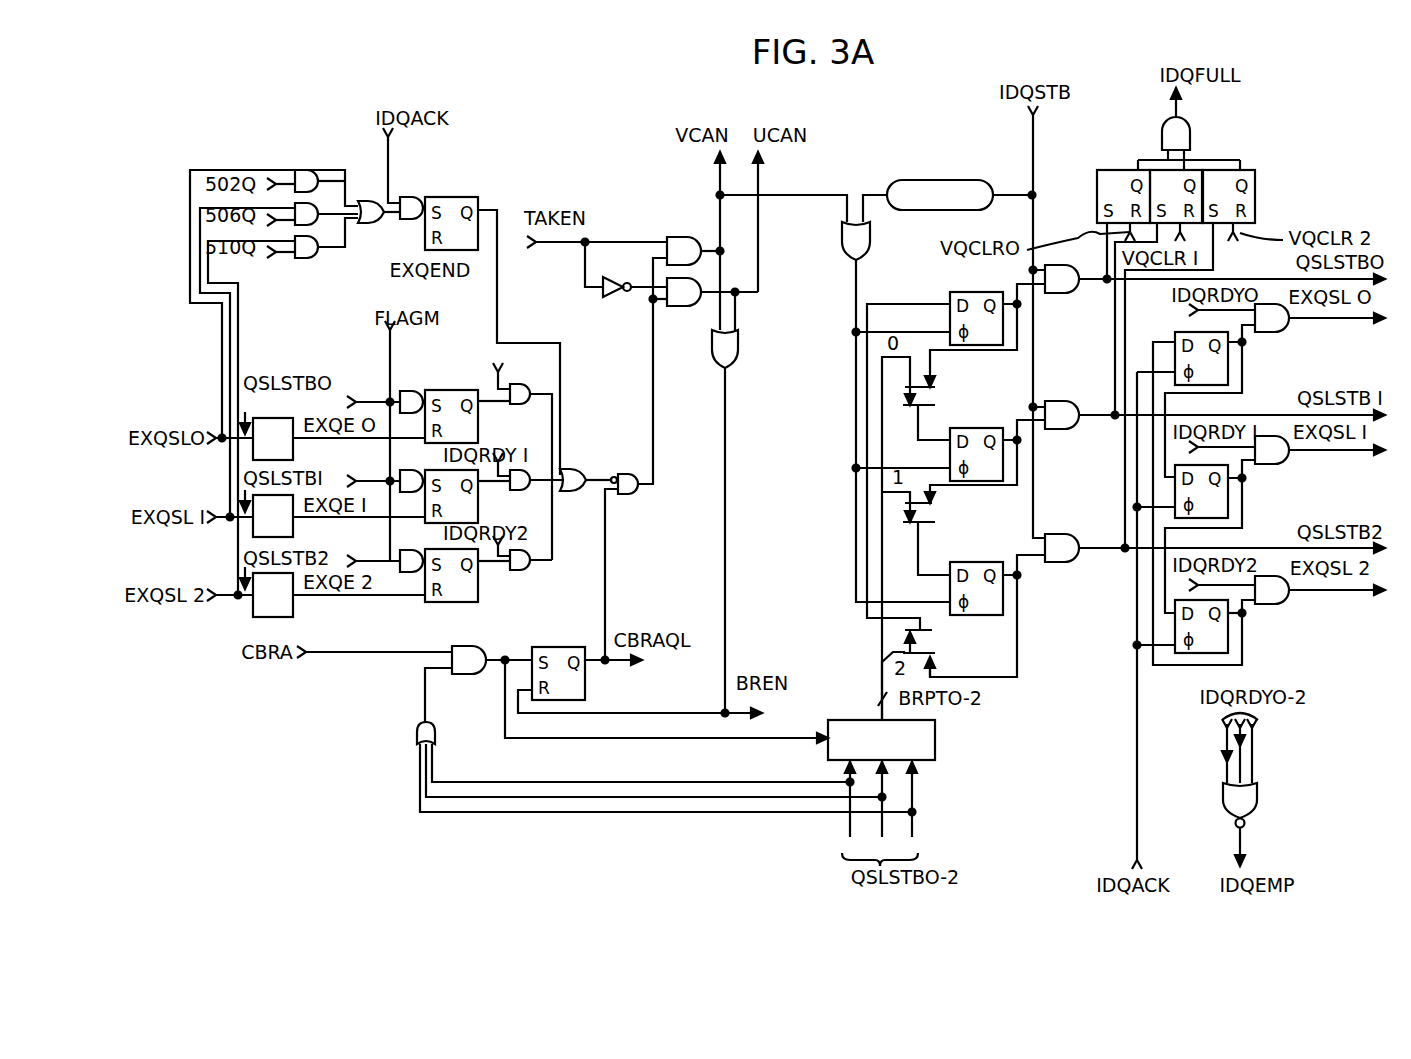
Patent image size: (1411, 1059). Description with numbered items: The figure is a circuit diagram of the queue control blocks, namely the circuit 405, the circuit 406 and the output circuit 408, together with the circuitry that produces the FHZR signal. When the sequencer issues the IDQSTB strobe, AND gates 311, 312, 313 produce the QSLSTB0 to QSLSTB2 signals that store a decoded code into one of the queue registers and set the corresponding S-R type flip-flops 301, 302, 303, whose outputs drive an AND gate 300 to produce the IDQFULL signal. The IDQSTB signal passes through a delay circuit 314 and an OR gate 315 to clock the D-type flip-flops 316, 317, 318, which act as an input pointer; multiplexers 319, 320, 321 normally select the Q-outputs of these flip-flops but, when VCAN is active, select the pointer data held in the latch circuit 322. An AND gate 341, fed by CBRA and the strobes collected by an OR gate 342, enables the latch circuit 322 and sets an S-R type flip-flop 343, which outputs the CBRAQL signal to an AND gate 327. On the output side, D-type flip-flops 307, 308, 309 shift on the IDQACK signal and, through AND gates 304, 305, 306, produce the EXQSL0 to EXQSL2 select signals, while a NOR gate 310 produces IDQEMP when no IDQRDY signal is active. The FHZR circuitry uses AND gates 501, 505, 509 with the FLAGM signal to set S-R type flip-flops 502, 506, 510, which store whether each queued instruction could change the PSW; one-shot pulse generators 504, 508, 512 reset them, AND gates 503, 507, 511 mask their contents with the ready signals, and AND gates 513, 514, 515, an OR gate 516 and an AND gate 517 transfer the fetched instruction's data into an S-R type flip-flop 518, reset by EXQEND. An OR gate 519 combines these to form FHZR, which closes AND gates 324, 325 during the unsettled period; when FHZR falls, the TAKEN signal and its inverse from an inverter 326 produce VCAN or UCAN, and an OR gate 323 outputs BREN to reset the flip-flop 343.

The AND gate 300 is at (1192, 132).
The S-R type flip-flop 301 is at (1110, 172).
The S-R type flip-flop 302 is at (1198, 173).
The S-R type flip-flop 303 is at (1258, 195).
The AND gate 304 is at (1290, 333).
The AND gate 305 is at (1290, 465).
The AND gate 306 is at (1290, 605).
The D-type flip-flop 307 is at (1228, 368).
The D-type flip-flop 308 is at (1228, 503).
The D-type flip-flop 309 is at (1228, 640).
The NOR gate 310 is at (1258, 795).
The AND gate 311 is at (1063, 293).
The AND gate 312 is at (1061, 429).
The AND gate 313 is at (1061, 562).
The delay circuit 314 is at (945, 180).
The OR gate 315 is at (872, 240).
The D-type flip-flop 316 is at (990, 292).
The D-type flip-flop 317 is at (983, 428).
The D-type flip-flop 318 is at (983, 562).
The multiplexer 319 is at (940, 383).
The multiplexer 320 is at (940, 513).
The multiplexer 321 is at (940, 646).
The latch circuit 322 is at (937, 740).
The OR gate 323 is at (740, 349).
The AND gate 324 is at (684, 237).
The AND gate 325 is at (680, 306).
The inverter 326 is at (612, 297).
The AND gate 327 is at (640, 494).
The AND gate 341 is at (485, 646).
The OR gate 342 is at (437, 738).
The S-R type flip-flop 343 is at (585, 684).
The circuit 405 is at (1062, 516).
The circuit 406 is at (960, 781).
The output circuit 408 is at (660, 230).
The AND gate 501 is at (406, 391).
The S-R type flip-flop 502 is at (454, 390).
The AND gate 503 is at (522, 384).
The one-shot pulse generator 504 is at (295, 452).
The AND gate 505 is at (406, 470).
The S-R type flip-flop 506 is at (478, 517).
The AND gate 507 is at (532, 490).
The one-shot pulse generator 508 is at (295, 530).
The AND gate 509 is at (406, 550).
The S-R type flip-flop 510 is at (478, 598).
The AND gate 511 is at (530, 568).
The one-shot pulse generator 512 is at (295, 611).
The AND gate 513 is at (307, 170).
The AND gate 514 is at (323, 200).
The AND gate 515 is at (313, 258).
The OR gate 516 is at (369, 224).
The AND gate 517 is at (405, 197).
The S-R type flip-flop 518 is at (462, 197).
The OR gate 519 is at (572, 469).